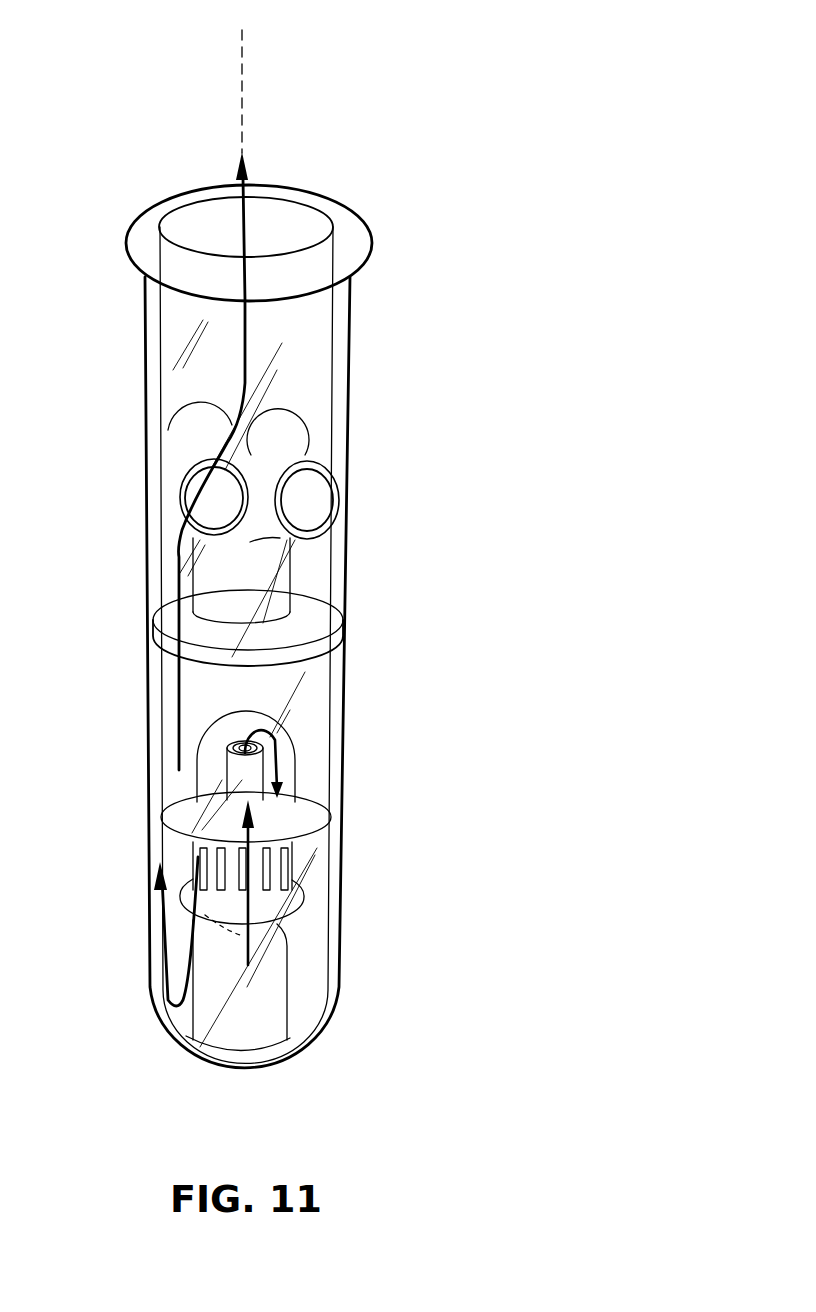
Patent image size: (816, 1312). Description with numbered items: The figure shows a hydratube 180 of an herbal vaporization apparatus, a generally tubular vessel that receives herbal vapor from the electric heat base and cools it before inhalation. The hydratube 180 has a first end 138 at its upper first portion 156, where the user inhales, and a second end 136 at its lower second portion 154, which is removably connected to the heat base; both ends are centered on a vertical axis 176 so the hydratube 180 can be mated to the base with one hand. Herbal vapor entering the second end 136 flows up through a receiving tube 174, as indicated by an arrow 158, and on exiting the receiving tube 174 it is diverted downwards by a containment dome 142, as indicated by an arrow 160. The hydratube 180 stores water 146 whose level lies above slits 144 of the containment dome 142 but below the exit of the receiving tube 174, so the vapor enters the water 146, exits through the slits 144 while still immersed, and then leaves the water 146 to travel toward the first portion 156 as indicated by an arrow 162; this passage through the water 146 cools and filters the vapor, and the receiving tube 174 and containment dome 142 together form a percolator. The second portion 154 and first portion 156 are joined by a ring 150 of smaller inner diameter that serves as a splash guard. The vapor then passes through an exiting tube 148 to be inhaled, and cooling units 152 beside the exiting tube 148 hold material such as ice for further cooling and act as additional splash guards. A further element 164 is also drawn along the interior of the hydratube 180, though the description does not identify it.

The second end 136 is at (288, 1072).
The first end 138 is at (316, 208).
The containment dome 142 is at (283, 765).
The slits 144 is at (192, 857).
The water 146 is at (297, 835).
The exiting tube 148 is at (255, 540).
The ring 150 is at (300, 627).
The cooling units 152 is at (330, 488).
The second portion 154 is at (512, 894).
The first portion 156 is at (490, 260).
The arrow 158 is at (280, 933).
The arrow 160 is at (262, 702).
The arrow 162 is at (155, 912).
The wire 164 is at (177, 703).
The receiving tube 174 is at (252, 812).
The vertical axis 176 is at (243, 40).
The hydratube 180 is at (434, 102).